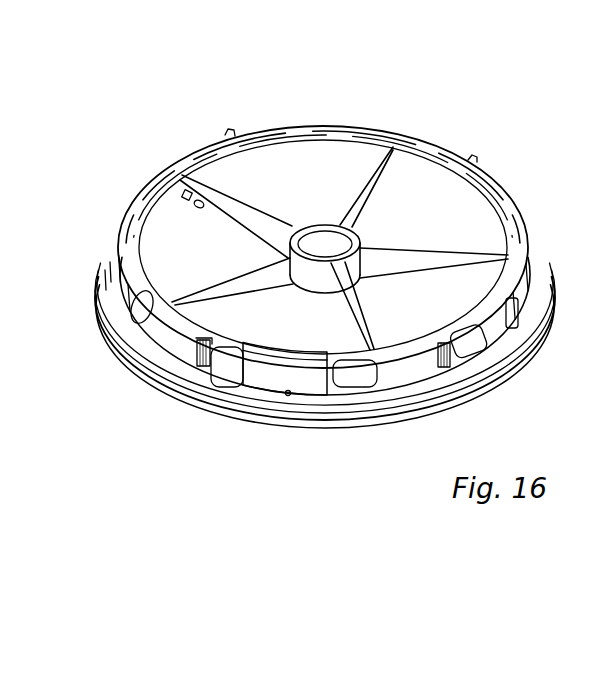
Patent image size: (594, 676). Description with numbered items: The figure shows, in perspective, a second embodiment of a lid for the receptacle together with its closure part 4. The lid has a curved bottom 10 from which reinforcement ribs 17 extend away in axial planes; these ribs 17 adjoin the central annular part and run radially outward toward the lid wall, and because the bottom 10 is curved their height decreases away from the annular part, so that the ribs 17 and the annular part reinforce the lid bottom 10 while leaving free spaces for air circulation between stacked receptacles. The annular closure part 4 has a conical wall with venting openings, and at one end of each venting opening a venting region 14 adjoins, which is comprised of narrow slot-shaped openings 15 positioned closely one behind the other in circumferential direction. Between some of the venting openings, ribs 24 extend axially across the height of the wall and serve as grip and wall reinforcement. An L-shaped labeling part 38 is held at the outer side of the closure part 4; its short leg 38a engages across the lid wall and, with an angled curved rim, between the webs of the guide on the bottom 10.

The closure part 4 is at (407, 136).
The reinforcement ribs 17 is at (252, 217).
The bottom 10 is at (412, 308).
The venting region 14 is at (200, 345).
The slot-shaped openings 15 is at (207, 355).
The labeling part 38 is at (258, 375).
The short leg 38a is at (297, 355).
The ribs 24 is at (513, 323).